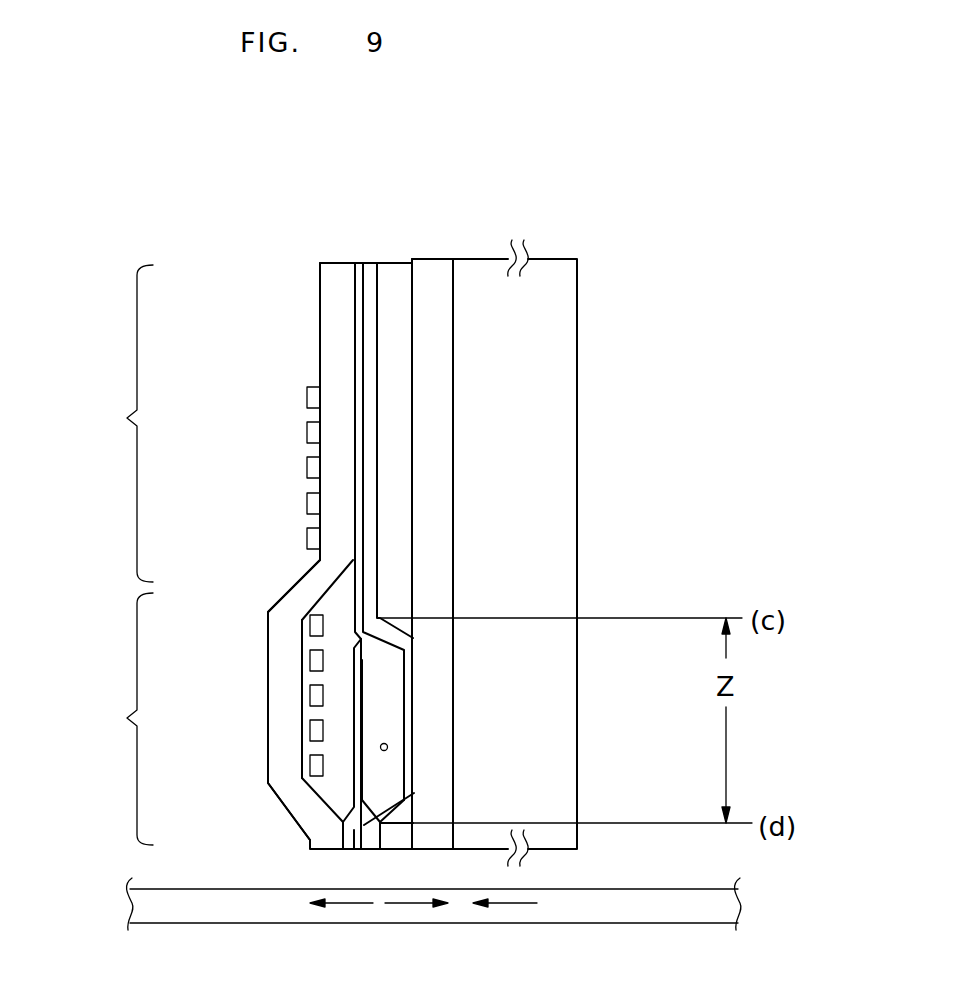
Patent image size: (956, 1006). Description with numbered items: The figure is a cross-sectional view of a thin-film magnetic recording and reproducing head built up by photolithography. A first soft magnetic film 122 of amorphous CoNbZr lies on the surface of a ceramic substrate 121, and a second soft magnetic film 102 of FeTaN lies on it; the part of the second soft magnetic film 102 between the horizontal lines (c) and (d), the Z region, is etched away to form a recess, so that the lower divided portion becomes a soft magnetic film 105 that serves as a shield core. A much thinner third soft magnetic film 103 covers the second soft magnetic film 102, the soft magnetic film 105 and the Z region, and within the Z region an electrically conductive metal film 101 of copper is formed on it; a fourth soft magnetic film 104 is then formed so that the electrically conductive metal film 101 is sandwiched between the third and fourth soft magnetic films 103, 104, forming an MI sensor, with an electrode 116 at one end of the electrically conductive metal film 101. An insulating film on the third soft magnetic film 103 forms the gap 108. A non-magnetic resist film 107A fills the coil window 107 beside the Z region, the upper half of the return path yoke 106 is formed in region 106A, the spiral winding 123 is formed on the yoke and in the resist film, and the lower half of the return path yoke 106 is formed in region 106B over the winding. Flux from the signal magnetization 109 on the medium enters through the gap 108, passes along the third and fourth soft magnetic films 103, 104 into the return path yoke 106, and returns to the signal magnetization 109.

The electrically conductive metal film 101 is at (395, 782).
The second soft magnetic film 102 is at (393, 277).
The third soft magnetic film 103 is at (368, 277).
The fourth soft magnetic film 104 is at (358, 263).
The soft magnetic film 105 is at (393, 837).
The return path yoke 106 is at (338, 280).
The region 106A is at (95, 423).
The region 106B is at (98, 719).
The coil window 107 is at (326, 610).
The non-magnetic resist film 107A is at (333, 681).
The gap 108 is at (352, 827).
The signal magnetization 109 is at (513, 900).
The electrode 116 is at (388, 746).
The ceramic substrate 121 is at (560, 323).
The first soft magnetic film 122 is at (432, 273).
The spiral winding 123 is at (314, 436).